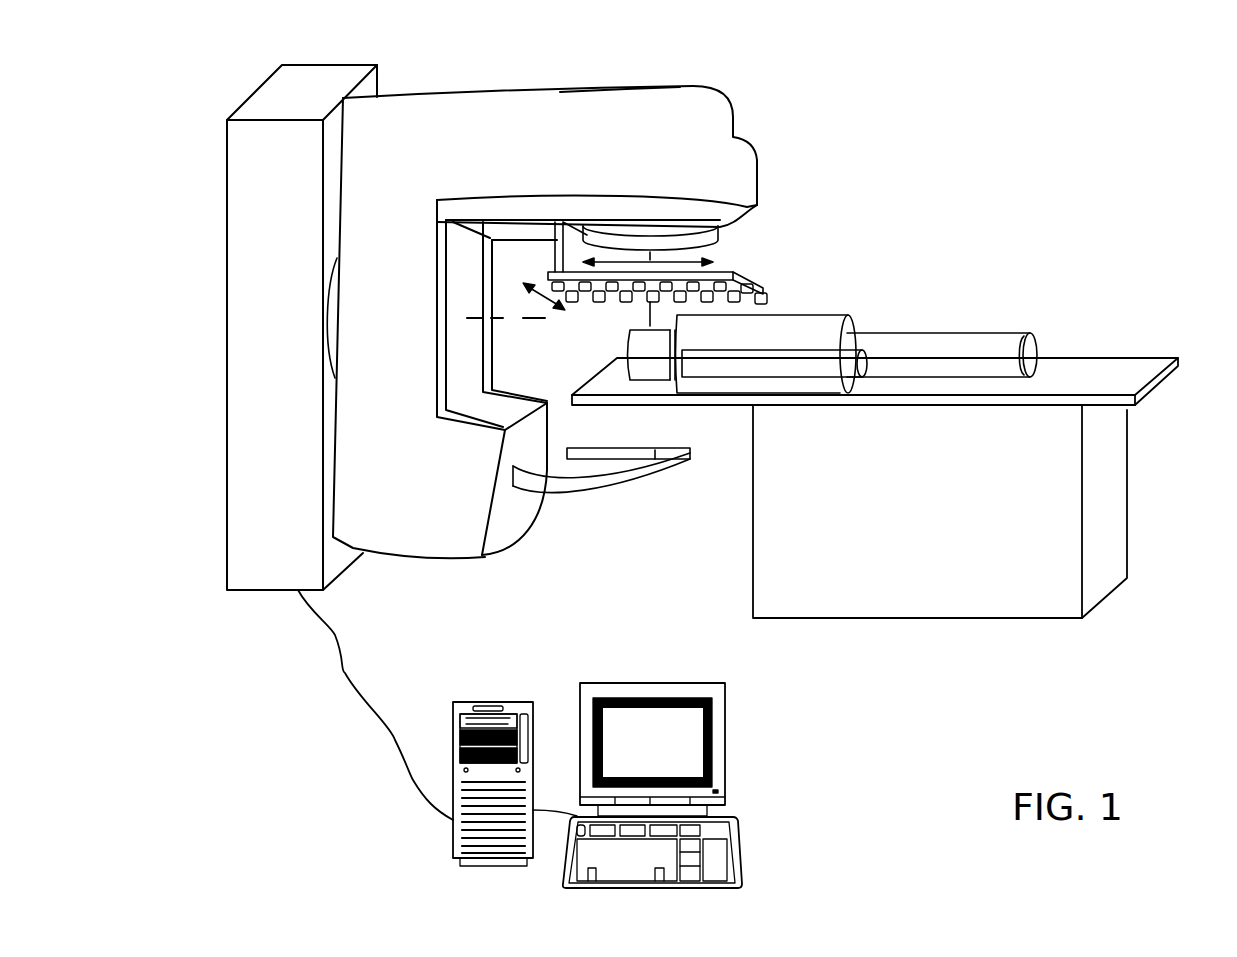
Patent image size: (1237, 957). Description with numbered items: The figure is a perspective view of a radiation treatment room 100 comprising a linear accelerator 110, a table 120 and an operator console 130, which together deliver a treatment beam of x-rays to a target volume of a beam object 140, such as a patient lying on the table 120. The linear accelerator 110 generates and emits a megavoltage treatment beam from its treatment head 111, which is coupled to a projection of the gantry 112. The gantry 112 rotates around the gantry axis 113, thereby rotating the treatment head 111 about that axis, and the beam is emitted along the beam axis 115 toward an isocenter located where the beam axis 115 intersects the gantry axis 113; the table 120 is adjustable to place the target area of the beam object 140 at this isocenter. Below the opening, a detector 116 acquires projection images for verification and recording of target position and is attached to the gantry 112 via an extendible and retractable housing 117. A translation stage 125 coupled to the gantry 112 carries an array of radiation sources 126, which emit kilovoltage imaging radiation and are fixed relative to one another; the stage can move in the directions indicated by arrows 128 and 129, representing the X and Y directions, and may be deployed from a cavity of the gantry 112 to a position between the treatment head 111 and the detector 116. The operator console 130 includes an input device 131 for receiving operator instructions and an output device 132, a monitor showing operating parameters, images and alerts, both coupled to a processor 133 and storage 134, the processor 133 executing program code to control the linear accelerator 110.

The radiation treatment room 100 is at (1025, 144).
The linear accelerator 110 is at (824, 188).
The treatment head 111 is at (757, 178).
The gantry 112 is at (552, 92).
The gantry axis 113 is at (503, 320).
The beam axis 115 is at (650, 312).
The detector 116 is at (690, 459).
The extendible and retractable housing 117 is at (606, 483).
The table 120 is at (1092, 368).
The translation stage 125 is at (737, 270).
The radiation sources 126 is at (772, 296).
The arrow 128 is at (720, 261).
The arrow 129 is at (542, 287).
The operator console 130 is at (762, 732).
The input device 131 is at (737, 850).
The output device 132 is at (652, 682).
The processor 133 is at (510, 700).
The storage 134 is at (488, 738).
The beam object 140 is at (837, 313).